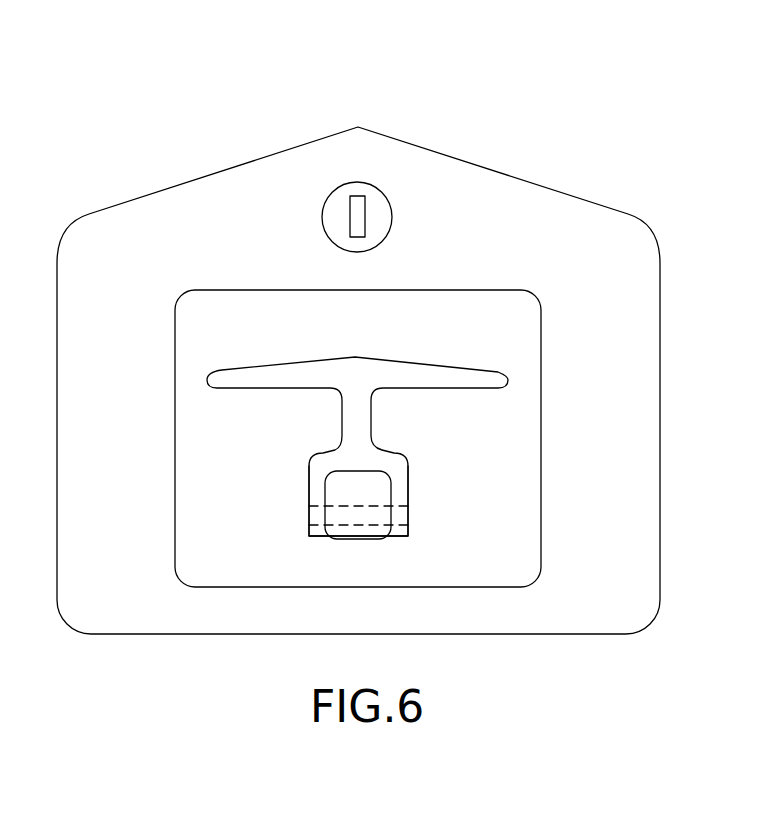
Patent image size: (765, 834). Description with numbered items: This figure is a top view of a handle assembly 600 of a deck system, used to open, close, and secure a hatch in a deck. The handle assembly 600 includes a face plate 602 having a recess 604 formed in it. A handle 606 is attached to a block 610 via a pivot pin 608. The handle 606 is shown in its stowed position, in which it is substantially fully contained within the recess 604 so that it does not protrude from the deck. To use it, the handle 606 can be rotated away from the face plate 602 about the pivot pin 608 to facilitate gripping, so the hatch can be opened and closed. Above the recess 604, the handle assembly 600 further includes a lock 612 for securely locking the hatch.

The handle assembly 600 is at (388, 324).
The face plate 602 is at (660, 462).
The recess 604 is at (517, 563).
The handle 606 is at (392, 361).
The pivot pin 608 is at (345, 520).
The block 610 is at (382, 535).
The lock 612 is at (392, 217).